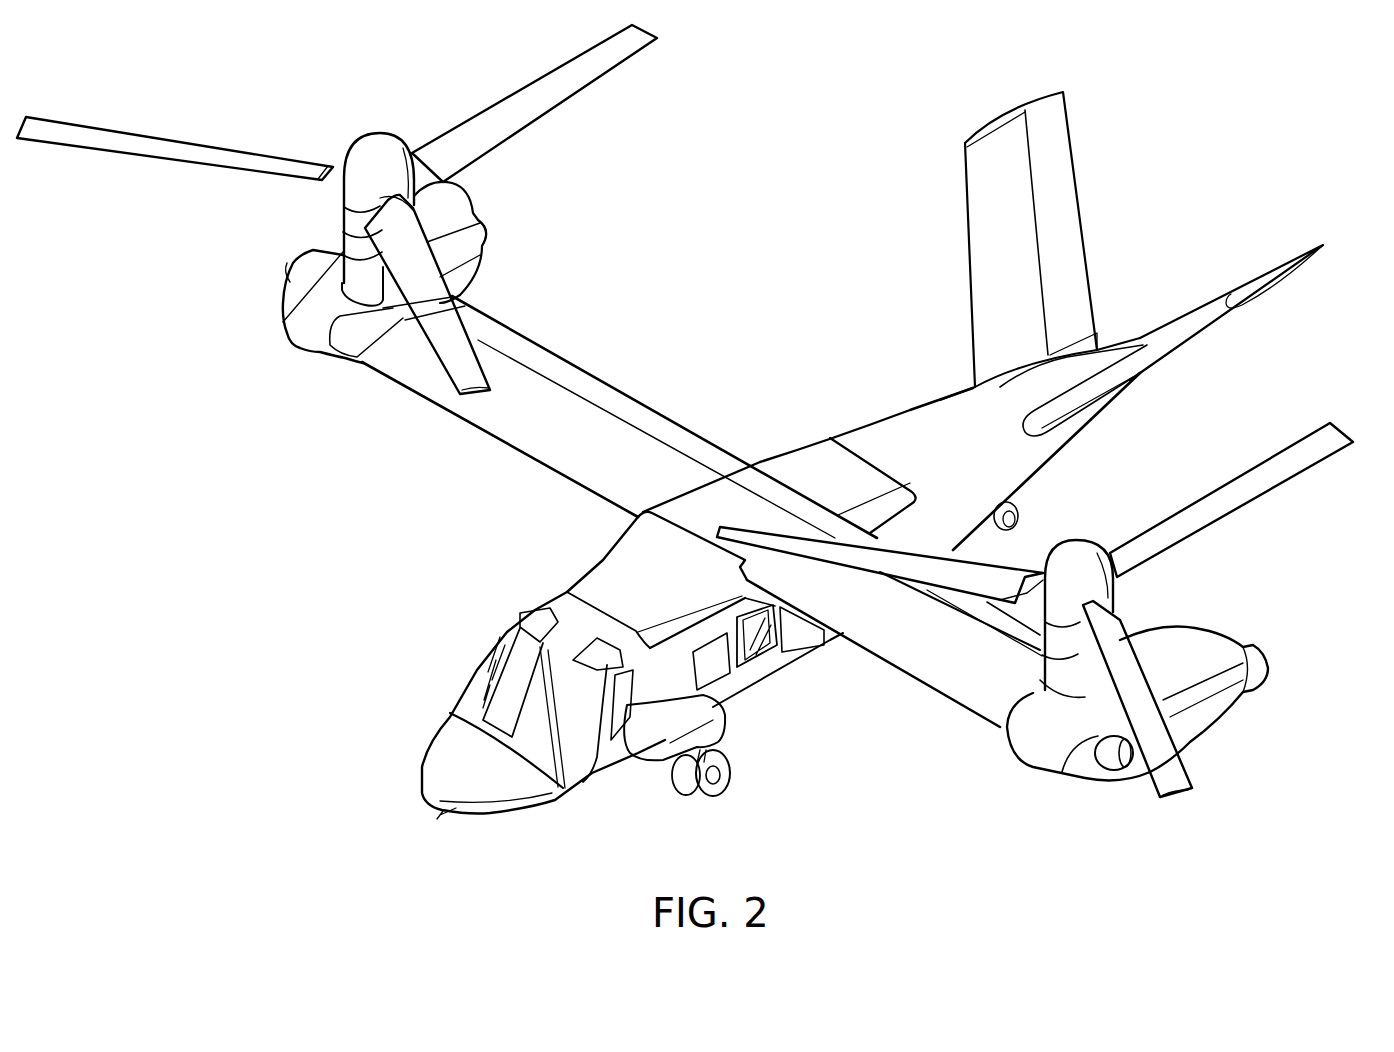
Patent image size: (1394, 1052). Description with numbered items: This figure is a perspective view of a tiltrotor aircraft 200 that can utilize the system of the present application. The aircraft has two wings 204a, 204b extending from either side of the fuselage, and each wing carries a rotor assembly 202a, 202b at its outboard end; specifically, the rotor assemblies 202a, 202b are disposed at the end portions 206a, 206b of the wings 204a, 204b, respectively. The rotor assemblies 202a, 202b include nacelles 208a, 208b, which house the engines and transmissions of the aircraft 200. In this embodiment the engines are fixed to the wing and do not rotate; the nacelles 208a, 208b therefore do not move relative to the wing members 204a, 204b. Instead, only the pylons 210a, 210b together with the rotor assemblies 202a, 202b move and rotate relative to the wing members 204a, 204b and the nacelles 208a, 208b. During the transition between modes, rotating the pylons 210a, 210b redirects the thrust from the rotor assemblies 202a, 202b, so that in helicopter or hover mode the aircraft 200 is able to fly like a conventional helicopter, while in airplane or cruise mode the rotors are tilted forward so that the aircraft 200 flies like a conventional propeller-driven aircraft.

The tiltrotor aircraft 200 is at (1158, 70).
The rotor assembly 202a is at (518, 88).
The rotor assembly 202b is at (1307, 468).
The wing 204a is at (540, 440).
The wing 204b is at (902, 650).
The end portion of wing 206a is at (482, 186).
The end portion of wing 206b is at (1284, 648).
The nacelle 208a is at (285, 325).
The nacelle 208b is at (1203, 713).
The pylon 210a is at (345, 240).
The pylon 210b is at (1050, 638).